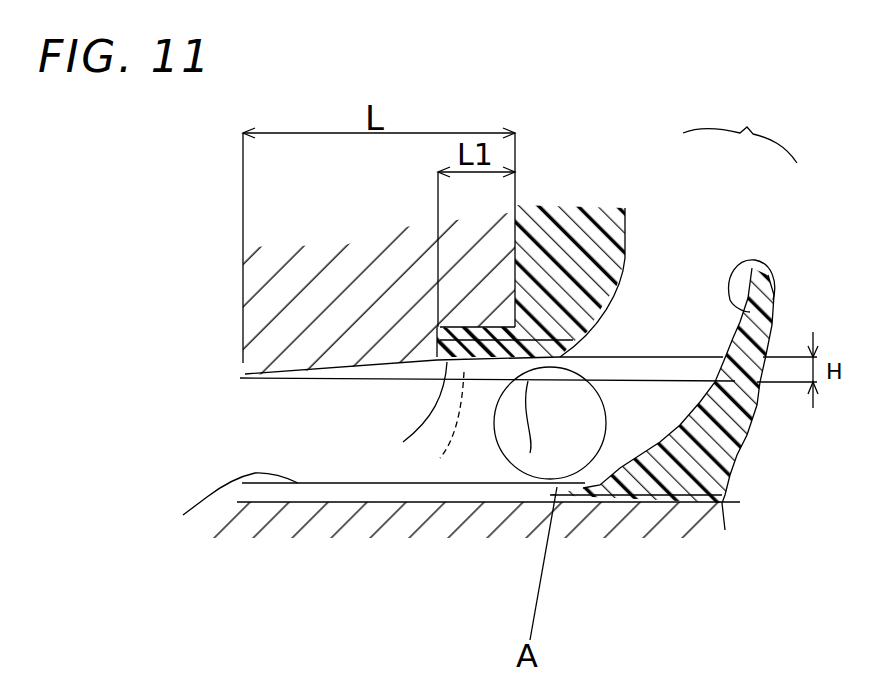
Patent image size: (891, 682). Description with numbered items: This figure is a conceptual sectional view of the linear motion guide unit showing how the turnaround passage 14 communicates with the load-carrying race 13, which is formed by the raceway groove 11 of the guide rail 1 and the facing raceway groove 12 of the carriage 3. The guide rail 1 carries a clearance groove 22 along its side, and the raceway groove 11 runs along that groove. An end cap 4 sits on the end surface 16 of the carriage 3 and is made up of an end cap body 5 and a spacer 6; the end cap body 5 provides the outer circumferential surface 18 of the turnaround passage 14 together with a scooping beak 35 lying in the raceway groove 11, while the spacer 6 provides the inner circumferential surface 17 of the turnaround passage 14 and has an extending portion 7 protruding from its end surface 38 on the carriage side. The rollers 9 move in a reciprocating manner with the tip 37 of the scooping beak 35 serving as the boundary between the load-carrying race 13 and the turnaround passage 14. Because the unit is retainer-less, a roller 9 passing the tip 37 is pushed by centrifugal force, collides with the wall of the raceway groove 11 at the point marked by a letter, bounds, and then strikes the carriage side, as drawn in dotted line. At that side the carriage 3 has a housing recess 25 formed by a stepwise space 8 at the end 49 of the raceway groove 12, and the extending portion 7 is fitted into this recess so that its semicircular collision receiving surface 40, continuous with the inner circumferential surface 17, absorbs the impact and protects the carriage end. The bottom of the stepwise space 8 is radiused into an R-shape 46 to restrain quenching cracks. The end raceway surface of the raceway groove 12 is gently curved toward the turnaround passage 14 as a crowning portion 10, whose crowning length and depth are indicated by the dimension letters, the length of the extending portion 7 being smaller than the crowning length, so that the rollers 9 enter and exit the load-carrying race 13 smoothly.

The guide rail 1 is at (462, 517).
The carriage 3 is at (445, 257).
The end cap 4 is at (740, 131).
The end cap body 5 is at (766, 300).
The spacer 6 is at (625, 203).
The extending portion 7 is at (478, 325).
The stepwise space 8 is at (422, 414).
The roller 9 is at (503, 490).
The crowning portion 10 is at (398, 375).
The raceway groove of guide rail 11 is at (221, 510).
The raceway groove of carriage 12 is at (268, 376).
The load-carrying race 13 is at (255, 445).
The turnaround passage 14 is at (708, 330).
The end surface of carriage 16 is at (543, 220).
The inner circumferential surface 17 is at (625, 258).
The outer circumferential surface 18 is at (735, 300).
The clearance groove 22 is at (311, 497).
The housing recess 25 is at (600, 333).
The scooping beak 35 is at (575, 500).
The tip of scooping beak 37 is at (568, 547).
The end surface of spacer 38 is at (512, 320).
The collision receiving surface 40 is at (456, 461).
The R-shape 46 is at (412, 328).
The end of raceway groove 49 is at (468, 327).